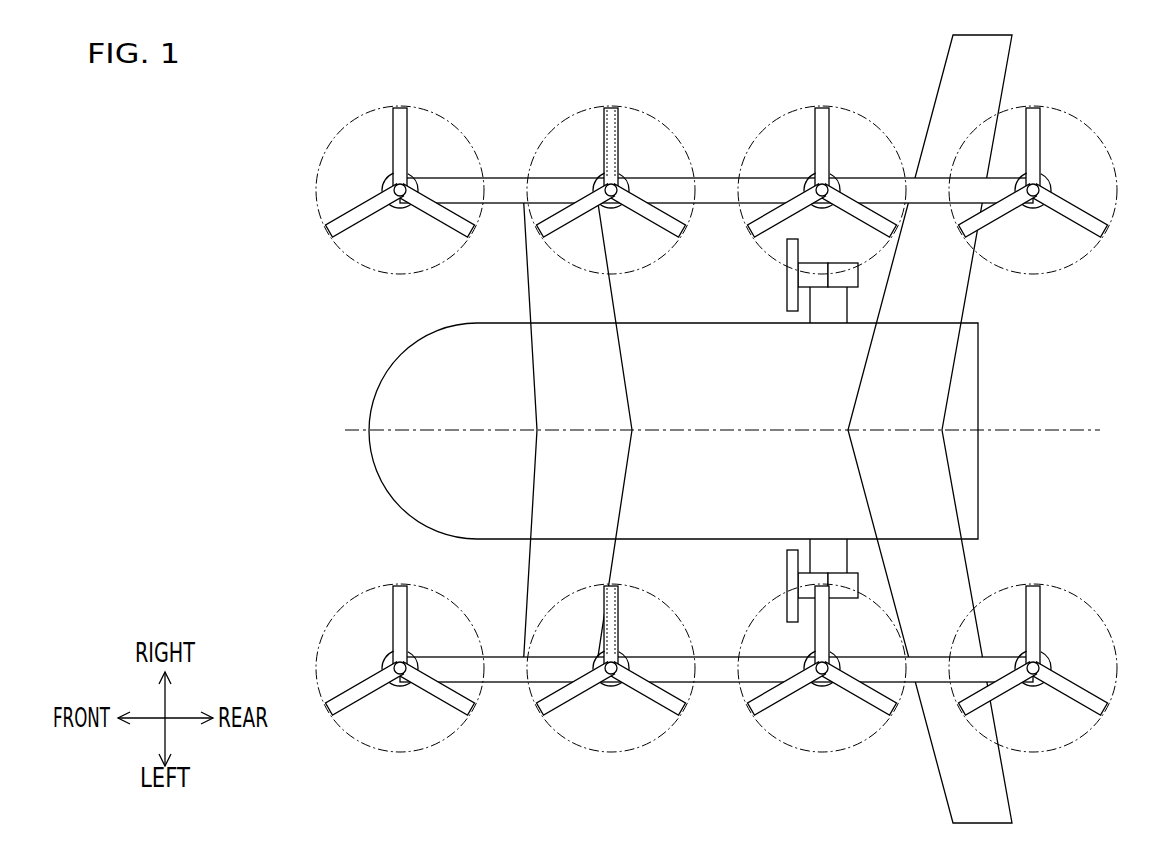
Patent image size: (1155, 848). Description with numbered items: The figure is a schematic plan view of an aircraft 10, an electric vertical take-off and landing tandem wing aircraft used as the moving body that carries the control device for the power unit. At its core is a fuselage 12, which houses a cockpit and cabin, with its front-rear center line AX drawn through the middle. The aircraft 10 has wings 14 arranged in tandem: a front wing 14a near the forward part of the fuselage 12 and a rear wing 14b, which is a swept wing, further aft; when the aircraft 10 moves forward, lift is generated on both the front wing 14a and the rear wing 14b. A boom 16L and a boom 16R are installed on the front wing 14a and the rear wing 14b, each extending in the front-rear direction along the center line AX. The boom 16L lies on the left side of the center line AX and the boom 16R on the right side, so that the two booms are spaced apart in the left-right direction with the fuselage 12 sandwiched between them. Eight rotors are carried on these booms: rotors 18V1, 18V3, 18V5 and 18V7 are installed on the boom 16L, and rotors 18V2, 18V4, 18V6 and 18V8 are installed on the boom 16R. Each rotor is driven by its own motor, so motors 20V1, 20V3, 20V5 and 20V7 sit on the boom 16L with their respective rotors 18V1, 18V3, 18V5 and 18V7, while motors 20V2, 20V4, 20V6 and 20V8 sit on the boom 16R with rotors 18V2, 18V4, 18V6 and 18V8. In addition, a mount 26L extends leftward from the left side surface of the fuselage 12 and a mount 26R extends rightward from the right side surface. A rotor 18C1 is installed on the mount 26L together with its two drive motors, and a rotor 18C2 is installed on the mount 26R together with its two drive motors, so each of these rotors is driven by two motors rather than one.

The aircraft 10 is at (286, 99).
The fuselage 12 is at (398, 507).
The wings 14 is at (712, 431).
The front wing 14a is at (543, 476).
The rear wing 14b is at (940, 370).
The boom 16R is at (515, 195).
The boom 16L is at (512, 665).
The rotor 18V1 is at (353, 705).
The rotor 18V2 is at (395, 108).
The rotor 18V3 is at (564, 705).
The rotor 18V4 is at (606, 108).
The rotor 18V5 is at (775, 705).
The rotor 18V6 is at (817, 108).
The rotor 18V7 is at (975, 706).
The rotor 18V8 is at (1036, 108).
The motor 20V1 is at (409, 680).
The motor 20V2 is at (407, 184).
The motor 20V3 is at (620, 680).
The motor 20V4 is at (618, 184).
The motor 20V5 is at (831, 680).
The motor 20V6 is at (829, 184).
The motor 20V7 is at (1041, 680).
The motor 20V8 is at (1050, 184).
The rotor 18C1 is at (788, 578).
The rotor 18C2 is at (788, 286).
The mount 26R is at (828, 312).
The mount 26L is at (837, 546).
The center line AX is at (704, 429).